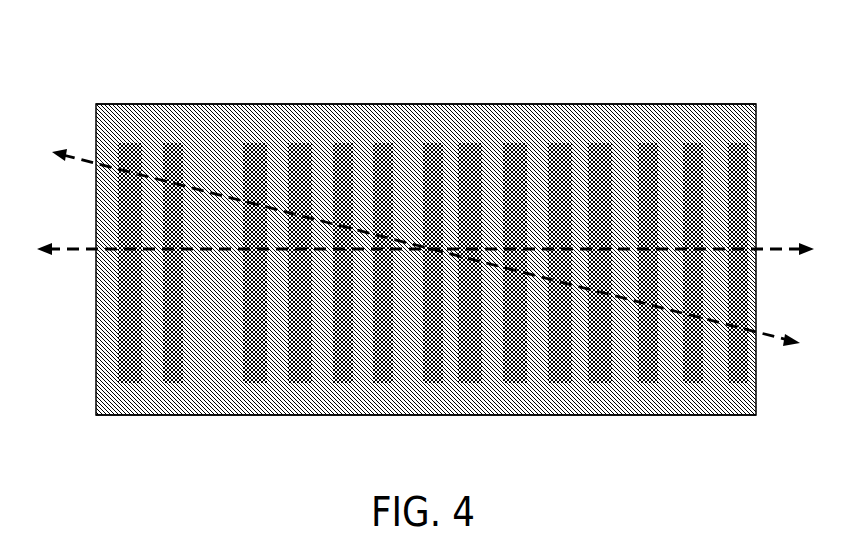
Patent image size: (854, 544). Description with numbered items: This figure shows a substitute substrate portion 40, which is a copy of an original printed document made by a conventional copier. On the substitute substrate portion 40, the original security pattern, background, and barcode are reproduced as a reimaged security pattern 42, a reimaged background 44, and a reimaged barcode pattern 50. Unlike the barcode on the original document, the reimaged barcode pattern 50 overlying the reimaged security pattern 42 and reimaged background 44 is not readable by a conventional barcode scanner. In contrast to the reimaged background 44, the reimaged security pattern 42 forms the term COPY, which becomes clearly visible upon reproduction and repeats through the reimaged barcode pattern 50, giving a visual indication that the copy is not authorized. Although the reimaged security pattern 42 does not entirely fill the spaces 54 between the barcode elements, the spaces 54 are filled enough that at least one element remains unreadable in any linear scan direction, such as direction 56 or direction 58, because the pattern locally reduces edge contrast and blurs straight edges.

The substitute substrate portion 40 is at (414, 90).
The reimaged security pattern 42 is at (114, 117).
The reimaged background 44 is at (688, 106).
The reimaged barcode pattern 50 is at (104, 308).
The spaces 54 is at (258, 156).
The linear scan direction 56 is at (762, 239).
The linear scan direction 58 is at (776, 335).